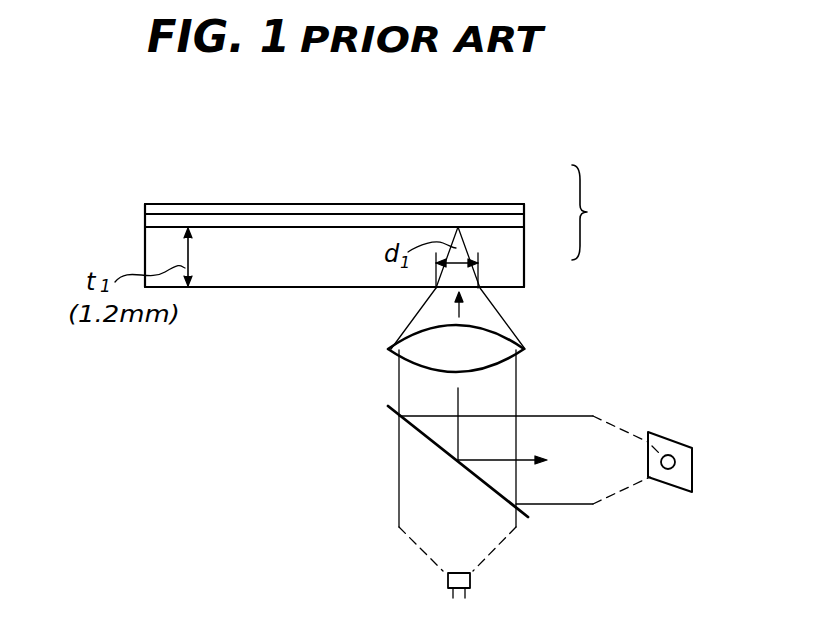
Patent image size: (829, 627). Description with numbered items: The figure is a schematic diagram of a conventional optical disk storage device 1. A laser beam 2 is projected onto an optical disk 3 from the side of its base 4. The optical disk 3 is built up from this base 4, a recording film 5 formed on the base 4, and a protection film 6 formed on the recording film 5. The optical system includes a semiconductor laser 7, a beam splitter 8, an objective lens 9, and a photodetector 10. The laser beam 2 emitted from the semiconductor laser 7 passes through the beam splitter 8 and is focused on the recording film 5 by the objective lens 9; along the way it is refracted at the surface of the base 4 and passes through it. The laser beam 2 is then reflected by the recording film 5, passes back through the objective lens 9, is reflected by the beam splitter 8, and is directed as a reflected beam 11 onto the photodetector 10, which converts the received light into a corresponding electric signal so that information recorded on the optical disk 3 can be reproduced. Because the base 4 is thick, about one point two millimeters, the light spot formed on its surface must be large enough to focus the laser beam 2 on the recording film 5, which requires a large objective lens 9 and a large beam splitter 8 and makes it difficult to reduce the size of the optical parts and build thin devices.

The optical disk storage device 1 is at (172, 178).
The laser beam 2 is at (461, 314).
The optical disk 3 is at (593, 212).
The base 4 is at (520, 253).
The recording film 5 is at (517, 224).
The protection film 6 is at (512, 208).
The semiconductor laser 7 is at (448, 582).
The beam splitter 8 is at (430, 437).
The objective lens 9 is at (421, 356).
The photodetector 10 is at (672, 440).
The reflected beam 11 is at (522, 458).